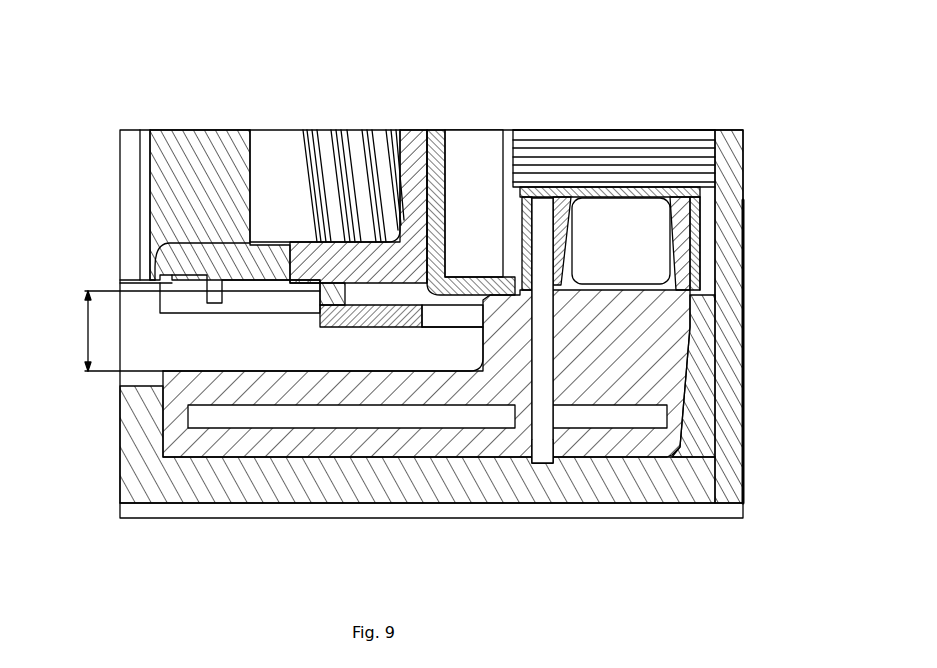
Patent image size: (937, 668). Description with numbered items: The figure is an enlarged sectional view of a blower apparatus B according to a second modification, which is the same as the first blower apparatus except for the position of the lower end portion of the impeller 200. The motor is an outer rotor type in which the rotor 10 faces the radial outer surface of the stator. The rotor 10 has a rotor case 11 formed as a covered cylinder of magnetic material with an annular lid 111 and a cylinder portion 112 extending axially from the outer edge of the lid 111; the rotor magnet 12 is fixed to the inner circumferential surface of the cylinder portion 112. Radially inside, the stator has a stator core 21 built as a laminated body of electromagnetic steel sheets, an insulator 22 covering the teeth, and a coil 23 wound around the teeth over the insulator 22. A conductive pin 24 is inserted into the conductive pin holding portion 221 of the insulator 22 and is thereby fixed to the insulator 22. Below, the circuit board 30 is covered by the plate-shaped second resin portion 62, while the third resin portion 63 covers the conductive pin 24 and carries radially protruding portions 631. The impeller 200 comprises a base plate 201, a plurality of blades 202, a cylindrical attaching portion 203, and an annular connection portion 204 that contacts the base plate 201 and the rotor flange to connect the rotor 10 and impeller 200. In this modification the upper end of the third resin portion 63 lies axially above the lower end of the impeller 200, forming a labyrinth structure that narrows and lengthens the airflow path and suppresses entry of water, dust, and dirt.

The rotor 10 is at (563, 122).
The blower apparatus B is at (601, 113).
The stator core 21 is at (646, 142).
The insulator 22 is at (702, 208).
The conductive pin holding portion 221 is at (533, 218).
The coil 23 is at (657, 248).
The conductive pin 24 is at (545, 466).
The rotor magnet 12 is at (462, 130).
The rotor case 11 is at (437, 130).
The lid 111 is at (405, 133).
The cylinder portion 112 is at (405, 328).
The attaching portion 203 is at (398, 204).
The impeller 200 is at (332, 130).
The blades 202 is at (296, 133).
The base plate 201 is at (187, 264).
The connection portion 204 is at (374, 300).
The third resin portion 63 is at (114, 331).
The protruding portion 631 is at (483, 346).
The circuit board 30 is at (252, 420).
The second resin portion 62 is at (200, 458).